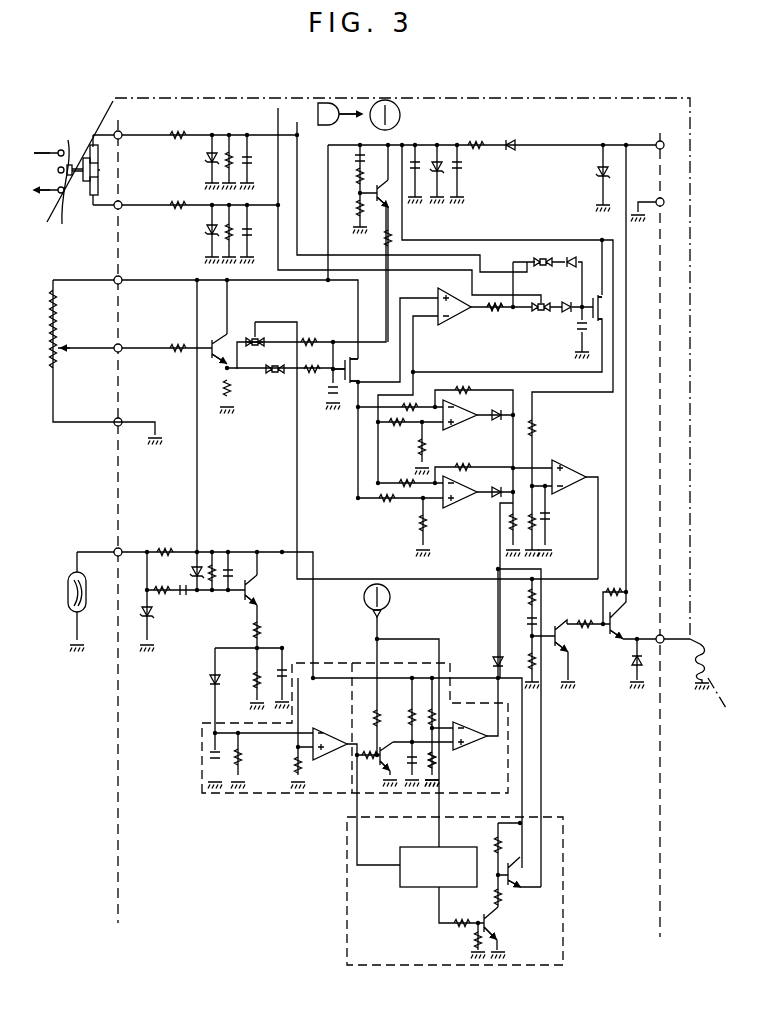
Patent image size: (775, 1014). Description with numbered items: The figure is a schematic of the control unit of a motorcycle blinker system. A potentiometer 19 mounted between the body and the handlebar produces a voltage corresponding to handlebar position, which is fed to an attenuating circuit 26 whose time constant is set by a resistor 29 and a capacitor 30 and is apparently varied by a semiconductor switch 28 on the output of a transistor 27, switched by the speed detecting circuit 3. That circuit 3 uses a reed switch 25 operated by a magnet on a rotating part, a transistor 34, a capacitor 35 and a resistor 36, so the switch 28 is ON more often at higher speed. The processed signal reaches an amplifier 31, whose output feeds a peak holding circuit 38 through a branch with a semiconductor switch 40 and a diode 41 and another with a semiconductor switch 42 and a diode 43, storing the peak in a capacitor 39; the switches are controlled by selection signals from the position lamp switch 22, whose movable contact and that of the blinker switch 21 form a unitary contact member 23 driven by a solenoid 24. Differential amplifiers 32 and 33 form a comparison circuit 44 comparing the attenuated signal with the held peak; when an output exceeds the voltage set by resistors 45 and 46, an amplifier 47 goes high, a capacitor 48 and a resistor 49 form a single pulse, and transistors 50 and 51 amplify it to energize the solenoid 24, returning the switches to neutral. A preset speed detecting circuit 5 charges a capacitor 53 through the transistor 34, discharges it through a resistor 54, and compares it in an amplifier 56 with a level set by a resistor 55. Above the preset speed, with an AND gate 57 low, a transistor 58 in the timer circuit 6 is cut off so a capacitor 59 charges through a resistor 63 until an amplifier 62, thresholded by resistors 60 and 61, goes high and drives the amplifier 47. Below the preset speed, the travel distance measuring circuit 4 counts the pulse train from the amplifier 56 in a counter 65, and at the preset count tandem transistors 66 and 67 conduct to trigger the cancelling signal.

The speed detecting circuit 3 is at (190, 598).
The travel distance measuring circuit 4 is at (344, 903).
The preset speed detecting circuit 5 is at (261, 799).
The timer circuit 6 is at (410, 663).
The potentiometer 19 is at (52, 351).
The blinker switch 21 is at (57, 167).
The position lamp switch 22 is at (98, 172).
The movable contact member 23 is at (75, 180).
The solenoid 24 is at (704, 649).
The reed switch 25 is at (66, 597).
The attenuating circuit 26 is at (246, 333).
The transistor 27 is at (210, 358).
The semiconductor switch 28 is at (270, 375).
The resistor 29 is at (312, 375).
The capacitor 30 is at (346, 387).
The amplifier 31 is at (445, 327).
The amplifier 32 is at (461, 432).
The amplifier 33 is at (468, 506).
The transistor 34 is at (247, 600).
The capacitor 35 is at (285, 669).
The resistor 36 is at (251, 673).
The peak holding circuit 38 is at (462, 316).
The capacitor 39 is at (536, 317).
The semiconductor switch 40 is at (512, 314).
The diode 41 is at (564, 304).
The semiconductor switch 42 is at (539, 259).
The diode 43 is at (570, 259).
The comparison circuit 44 is at (494, 446).
The resistor 45 is at (537, 425).
The resistor 46 is at (549, 521).
The amplifier 47 is at (571, 476).
The capacitor 48 is at (538, 619).
The resistor 49 is at (505, 643).
The transistor 50 is at (569, 651).
The transistor 51 is at (613, 620).
The capacitor 53 is at (212, 755).
The resistor 54 is at (243, 758).
The resistor 55 is at (300, 776).
The amplifier 56 is at (333, 731).
The AND gate 57 is at (322, 103).
The transistor 58 is at (388, 767).
The capacitor 59 is at (422, 773).
The resistor 60 is at (434, 701).
The resistor 61 is at (436, 761).
The amplifier 62 is at (474, 743).
The resistor 63 is at (410, 721).
The counter 65 is at (424, 889).
The transistor 66 is at (498, 931).
The transistor 67 is at (514, 881).